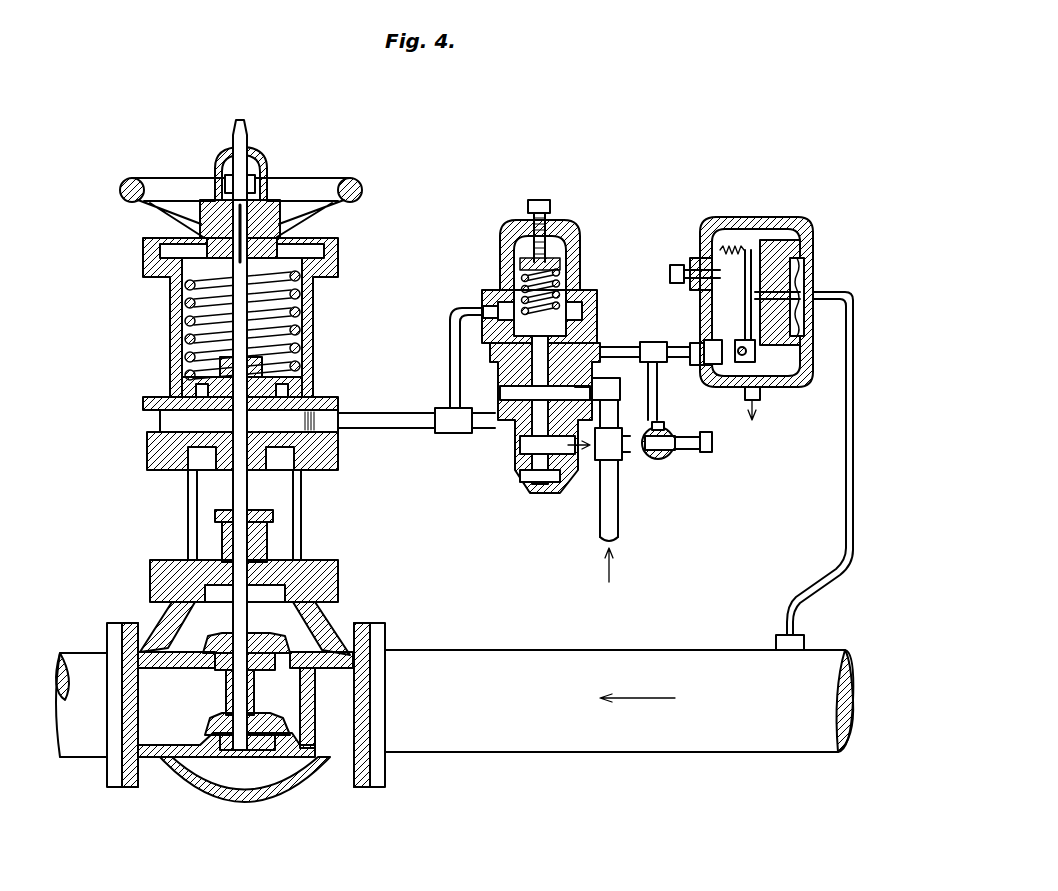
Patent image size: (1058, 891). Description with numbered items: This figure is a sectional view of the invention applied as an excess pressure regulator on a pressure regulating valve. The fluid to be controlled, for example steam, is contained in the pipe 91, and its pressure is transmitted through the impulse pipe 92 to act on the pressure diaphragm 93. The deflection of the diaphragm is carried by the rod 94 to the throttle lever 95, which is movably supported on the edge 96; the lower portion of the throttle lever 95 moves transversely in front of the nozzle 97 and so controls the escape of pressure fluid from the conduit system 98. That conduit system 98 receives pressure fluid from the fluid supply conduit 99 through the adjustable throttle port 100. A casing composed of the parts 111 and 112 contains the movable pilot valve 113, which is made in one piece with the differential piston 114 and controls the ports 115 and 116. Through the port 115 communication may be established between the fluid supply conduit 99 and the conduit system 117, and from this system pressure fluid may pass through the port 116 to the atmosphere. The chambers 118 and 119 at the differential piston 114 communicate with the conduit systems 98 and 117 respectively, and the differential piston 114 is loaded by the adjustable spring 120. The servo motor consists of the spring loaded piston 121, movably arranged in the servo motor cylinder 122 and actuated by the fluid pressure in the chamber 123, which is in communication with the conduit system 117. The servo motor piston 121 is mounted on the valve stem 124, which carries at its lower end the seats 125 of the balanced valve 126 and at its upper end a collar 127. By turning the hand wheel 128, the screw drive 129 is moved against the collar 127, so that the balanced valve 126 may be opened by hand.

The pipe 91 is at (648, 662).
The impulse pipe 92 is at (846, 460).
The pressure diaphragm 93 is at (802, 274).
The rod 94 is at (762, 304).
The throttle lever 95 is at (752, 250).
The edge 96 is at (708, 285).
The nozzle 97 is at (738, 362).
The conduit system 98 is at (653, 356).
The fluid supply conduit 99 is at (610, 505).
The adjustable throttle port 100 is at (655, 458).
The casing part 111 is at (575, 373).
The casing part 112 is at (578, 252).
The pilot valve 113 is at (528, 371).
The differential piston 114 is at (500, 338).
The port 115 is at (520, 392).
The port 116 is at (520, 446).
The conduit system 117 is at (438, 408).
The chamber 118 is at (582, 340).
The chamber 119 is at (584, 300).
The adjustable spring 120 is at (522, 278).
The spring loaded piston 121 is at (186, 387).
The servo motor cylinder 122 is at (176, 332).
The chamber 123 is at (198, 421).
The valve stem 124 is at (240, 494).
The seats 125 is at (292, 627).
The balanced valve 126 is at (282, 790).
The collar 127 is at (232, 184).
The hand wheel 128 is at (318, 184).
The screw drive 129 is at (256, 192).